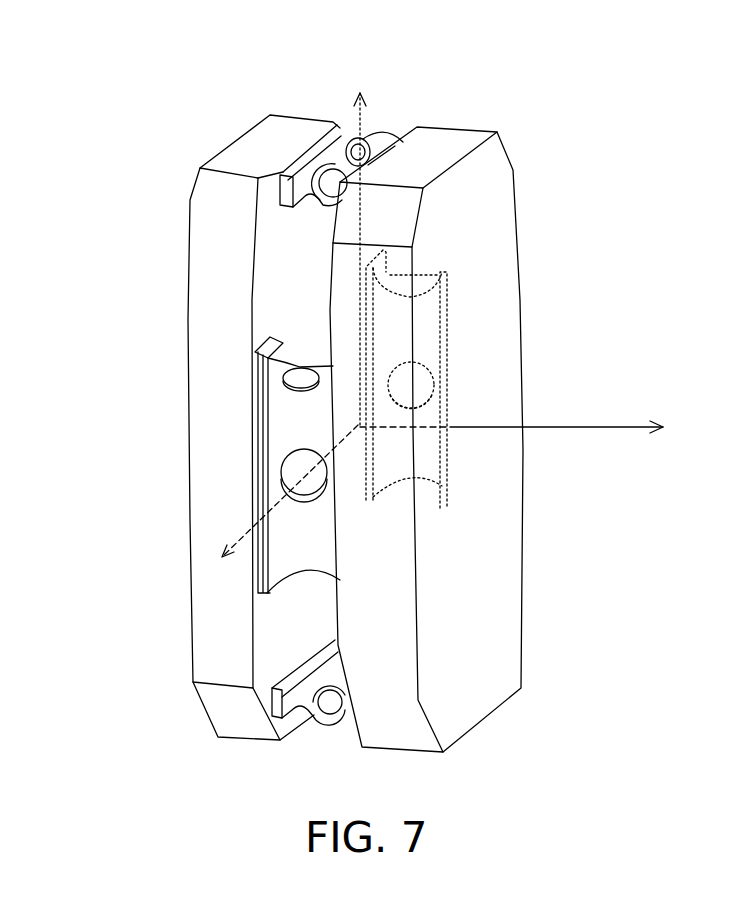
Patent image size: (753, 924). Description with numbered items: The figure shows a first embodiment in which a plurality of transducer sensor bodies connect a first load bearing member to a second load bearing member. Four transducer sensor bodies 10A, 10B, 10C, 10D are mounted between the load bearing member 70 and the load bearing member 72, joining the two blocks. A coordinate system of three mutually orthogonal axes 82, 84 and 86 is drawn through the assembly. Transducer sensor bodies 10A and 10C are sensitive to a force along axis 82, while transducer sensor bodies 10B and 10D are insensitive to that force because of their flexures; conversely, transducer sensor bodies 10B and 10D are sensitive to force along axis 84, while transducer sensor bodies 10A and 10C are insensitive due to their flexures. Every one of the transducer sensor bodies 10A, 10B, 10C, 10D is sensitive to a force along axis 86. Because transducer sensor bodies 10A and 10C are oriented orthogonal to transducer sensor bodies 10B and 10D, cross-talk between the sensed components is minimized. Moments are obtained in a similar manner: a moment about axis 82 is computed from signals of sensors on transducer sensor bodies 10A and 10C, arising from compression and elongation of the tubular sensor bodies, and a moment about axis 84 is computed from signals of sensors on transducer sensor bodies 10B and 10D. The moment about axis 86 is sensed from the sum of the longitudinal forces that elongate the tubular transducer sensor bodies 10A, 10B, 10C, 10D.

The load bearing member 70 is at (518, 235).
The load bearing member 72 is at (187, 270).
The axis 82 is at (258, 528).
The axis 84 is at (357, 122).
The axis 86 is at (573, 428).
The transducer sensor body 10A is at (383, 115).
The transducer sensor body 10B is at (470, 373).
The transducer sensor body 10C is at (317, 732).
The transducer sensor body 10D is at (238, 445).